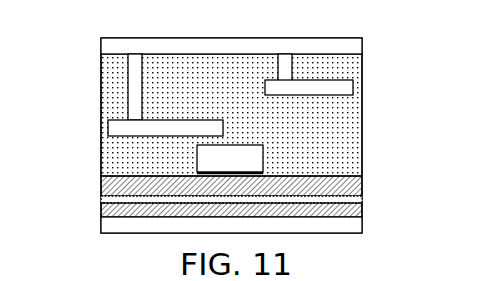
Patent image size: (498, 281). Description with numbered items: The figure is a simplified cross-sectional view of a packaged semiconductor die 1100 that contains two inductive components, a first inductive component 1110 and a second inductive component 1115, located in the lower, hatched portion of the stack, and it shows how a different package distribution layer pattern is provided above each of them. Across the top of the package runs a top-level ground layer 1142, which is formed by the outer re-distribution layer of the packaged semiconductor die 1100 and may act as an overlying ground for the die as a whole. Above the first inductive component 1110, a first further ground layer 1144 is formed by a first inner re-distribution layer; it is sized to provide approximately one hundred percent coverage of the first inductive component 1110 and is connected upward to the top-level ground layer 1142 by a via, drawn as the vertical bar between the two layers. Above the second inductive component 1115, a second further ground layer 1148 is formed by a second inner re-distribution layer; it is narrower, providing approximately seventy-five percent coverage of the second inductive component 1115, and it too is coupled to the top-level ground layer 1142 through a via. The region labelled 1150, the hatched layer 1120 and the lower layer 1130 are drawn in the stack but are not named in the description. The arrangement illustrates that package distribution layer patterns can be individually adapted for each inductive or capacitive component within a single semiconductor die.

The packaged semiconductor die 1100 is at (374, 183).
The top-level ground layer 1142 is at (101, 52).
The first further ground layer 1144 is at (101, 128).
The second further ground layer 1148 is at (353, 88).
The dielectric region 1150 is at (230, 159).
The upper bonded layer 1120 is at (101, 187).
The first inductive component 1110 is at (108, 200).
The second inductive component 1115 is at (362, 200).
The substrate 1130 is at (101, 227).